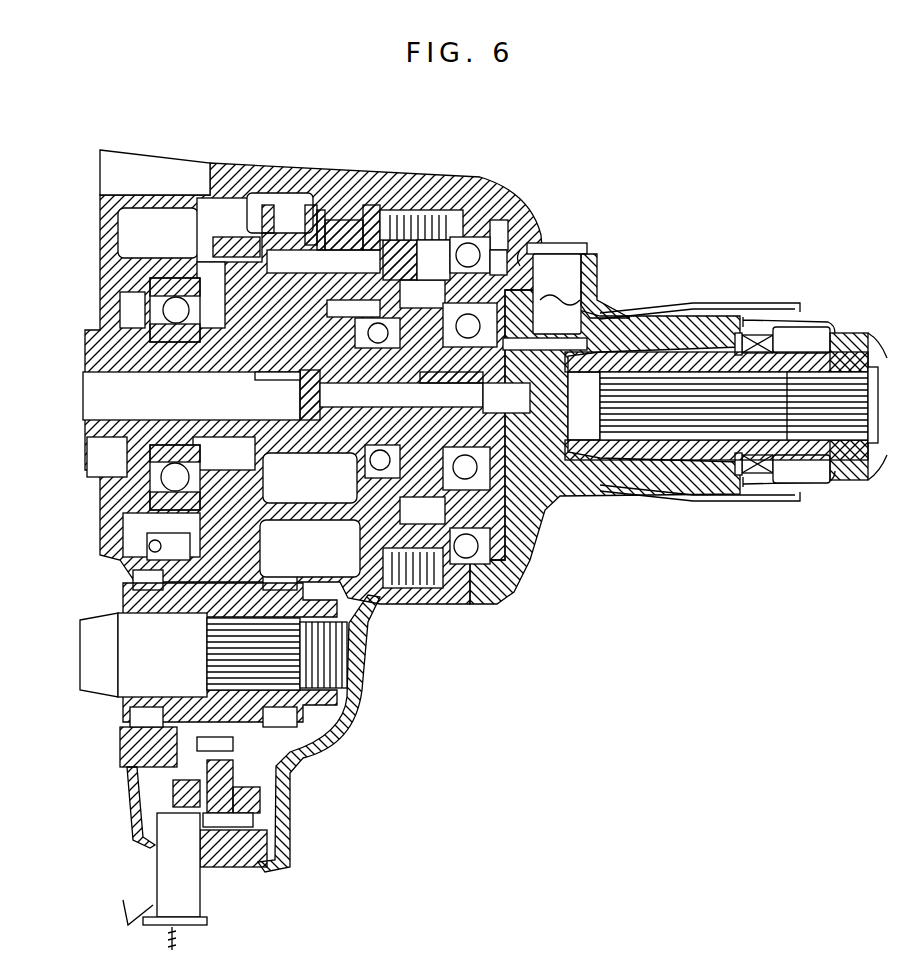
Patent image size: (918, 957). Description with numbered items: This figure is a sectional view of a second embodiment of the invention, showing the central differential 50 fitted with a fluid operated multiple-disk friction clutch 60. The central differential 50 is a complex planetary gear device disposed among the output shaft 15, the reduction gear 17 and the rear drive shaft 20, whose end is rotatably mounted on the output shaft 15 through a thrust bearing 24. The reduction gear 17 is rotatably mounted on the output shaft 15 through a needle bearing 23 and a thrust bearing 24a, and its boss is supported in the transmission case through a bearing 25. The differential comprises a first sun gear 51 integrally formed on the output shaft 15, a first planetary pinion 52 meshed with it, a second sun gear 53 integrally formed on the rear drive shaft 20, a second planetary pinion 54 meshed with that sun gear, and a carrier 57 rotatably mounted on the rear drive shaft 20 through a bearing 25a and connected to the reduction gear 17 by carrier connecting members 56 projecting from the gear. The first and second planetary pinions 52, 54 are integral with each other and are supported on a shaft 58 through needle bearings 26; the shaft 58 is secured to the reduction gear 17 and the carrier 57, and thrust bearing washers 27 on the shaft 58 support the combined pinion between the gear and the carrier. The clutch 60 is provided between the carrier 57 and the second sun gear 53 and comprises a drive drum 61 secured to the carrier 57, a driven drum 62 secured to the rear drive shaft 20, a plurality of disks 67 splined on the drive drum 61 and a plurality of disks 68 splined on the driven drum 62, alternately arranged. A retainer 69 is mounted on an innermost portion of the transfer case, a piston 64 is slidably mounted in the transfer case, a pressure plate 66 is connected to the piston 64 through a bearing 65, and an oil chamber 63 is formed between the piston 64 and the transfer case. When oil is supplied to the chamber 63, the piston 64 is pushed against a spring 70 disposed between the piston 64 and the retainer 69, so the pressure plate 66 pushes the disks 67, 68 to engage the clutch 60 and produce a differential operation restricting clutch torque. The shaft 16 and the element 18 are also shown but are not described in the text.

The output shaft 15 is at (145, 416).
The output shaft 16 is at (88, 655).
The reduction gear 17 is at (243, 240).
The shift mechanism 18 is at (248, 812).
The rear drive shaft 20 is at (572, 427).
The needle bearing 23 is at (350, 374).
The thrust bearing 24 is at (300, 376).
The thrust bearing 24a is at (262, 378).
The bearing 25 is at (175, 300).
The bearing 25a is at (430, 372).
The needle bearings 26 is at (333, 253).
The thrust bearing washers 27 is at (268, 240).
The central differential 50 is at (268, 210).
The first sun gear 51 is at (290, 467).
The first planetary pinion 52 is at (312, 215).
The second sun gear 53 is at (334, 457).
The second planetary pinion 54 is at (340, 215).
The carrier connecting members 56 is at (298, 522).
The carrier 57 is at (378, 205).
The shaft 58 is at (322, 215).
The fluid operated multiple-disk friction clutch 60 is at (450, 357).
The drive drum 61 is at (372, 215).
The driven drum 62 is at (488, 328).
The oil chamber 63 is at (580, 208).
The piston 64 is at (520, 250).
The bearing 65 is at (500, 260).
The pressure plate 66 is at (482, 235).
The disks 67 is at (414, 225).
The disks 68 is at (432, 238).
The retainer 69 is at (586, 294).
The spring 70 is at (480, 313).